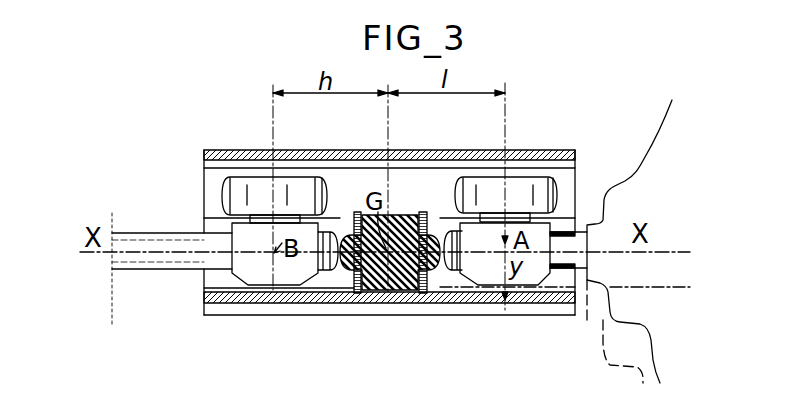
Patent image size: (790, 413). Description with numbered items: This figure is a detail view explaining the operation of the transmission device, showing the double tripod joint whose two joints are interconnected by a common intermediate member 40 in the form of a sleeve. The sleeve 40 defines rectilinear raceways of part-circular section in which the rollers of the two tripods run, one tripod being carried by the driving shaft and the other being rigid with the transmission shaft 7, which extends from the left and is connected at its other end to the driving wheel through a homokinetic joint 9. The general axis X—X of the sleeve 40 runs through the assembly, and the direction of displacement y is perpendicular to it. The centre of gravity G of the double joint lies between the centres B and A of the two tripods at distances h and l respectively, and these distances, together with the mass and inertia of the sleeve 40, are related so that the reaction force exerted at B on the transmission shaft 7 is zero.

The transmission shaft 7 is at (170, 260).
The homokinetic joint 9 is at (583, 230).
The intermediate member 40 is at (497, 141).